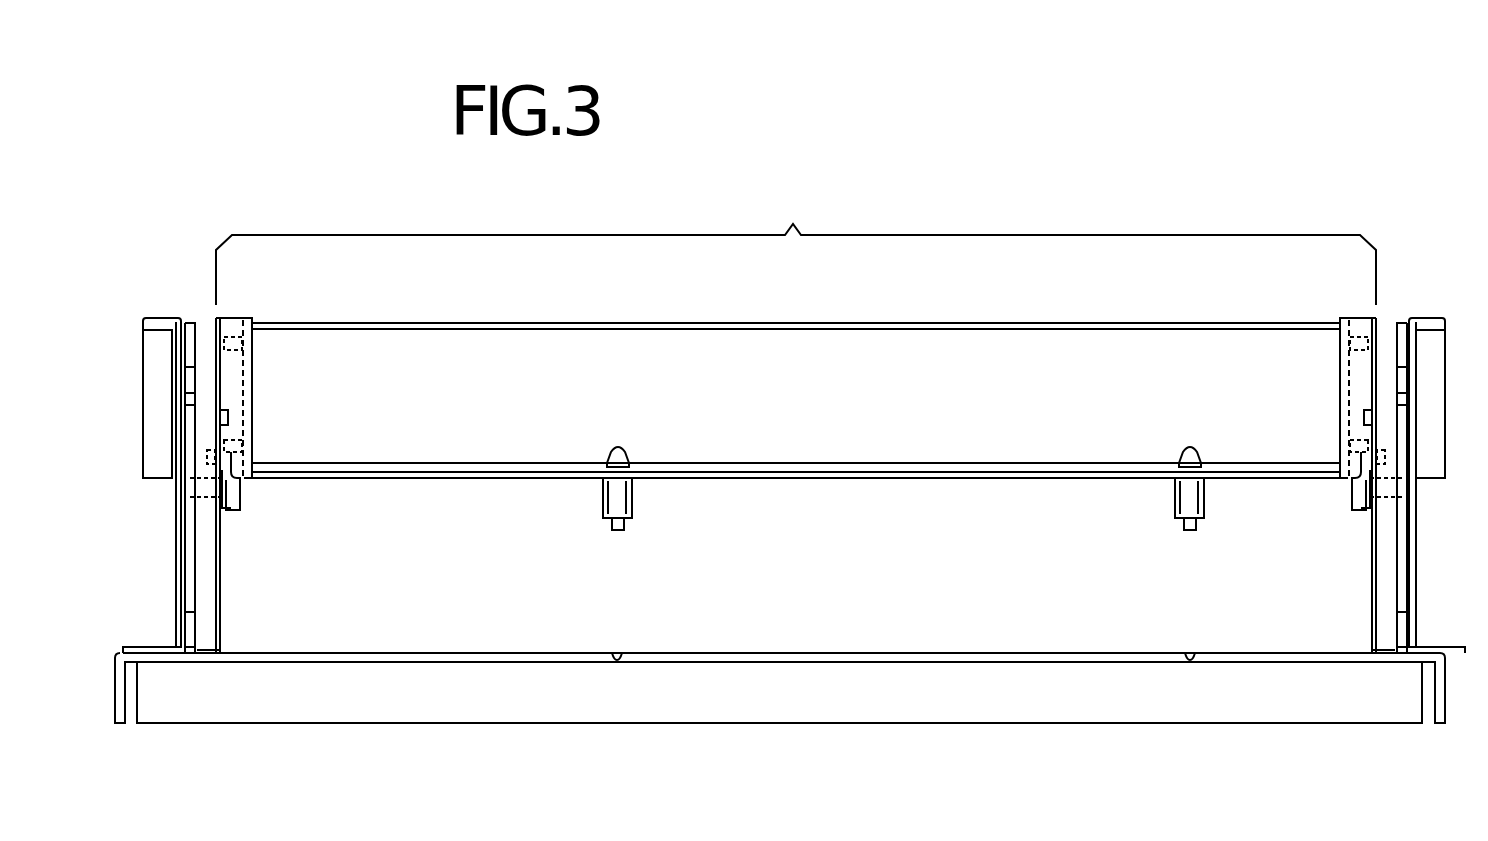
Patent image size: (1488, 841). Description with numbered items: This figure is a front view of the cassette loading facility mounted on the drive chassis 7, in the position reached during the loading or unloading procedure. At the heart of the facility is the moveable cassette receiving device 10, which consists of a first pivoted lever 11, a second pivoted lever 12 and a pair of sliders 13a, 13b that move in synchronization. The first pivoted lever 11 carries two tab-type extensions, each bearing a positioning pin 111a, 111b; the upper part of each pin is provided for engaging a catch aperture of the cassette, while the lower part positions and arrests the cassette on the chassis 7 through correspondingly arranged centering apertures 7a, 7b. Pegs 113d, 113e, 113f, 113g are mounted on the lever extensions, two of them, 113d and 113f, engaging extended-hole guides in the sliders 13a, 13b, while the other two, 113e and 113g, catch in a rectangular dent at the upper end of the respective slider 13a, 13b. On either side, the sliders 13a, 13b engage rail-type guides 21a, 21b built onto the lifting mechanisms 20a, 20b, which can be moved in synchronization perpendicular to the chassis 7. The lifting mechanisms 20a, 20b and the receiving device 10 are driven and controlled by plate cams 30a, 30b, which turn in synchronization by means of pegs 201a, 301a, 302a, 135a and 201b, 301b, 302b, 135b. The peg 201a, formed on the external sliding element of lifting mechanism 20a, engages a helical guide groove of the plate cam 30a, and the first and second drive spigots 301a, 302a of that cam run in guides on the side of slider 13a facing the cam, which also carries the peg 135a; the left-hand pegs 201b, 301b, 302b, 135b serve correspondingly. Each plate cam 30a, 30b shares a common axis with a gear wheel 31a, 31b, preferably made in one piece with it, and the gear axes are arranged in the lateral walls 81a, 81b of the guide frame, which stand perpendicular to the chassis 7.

The chassis 7 is at (1425, 738).
The centering aperture 7a is at (1190, 650).
The centering aperture 7b is at (618, 650).
The cassette receiving device 10 is at (796, 249).
The first pivoted lever 11 is at (818, 486).
The second pivoted lever 12 is at (648, 318).
The slider 13a is at (1352, 310).
The slider 13b is at (235, 310).
The lifting mechanism 20a is at (1462, 338).
The lifting mechanism 20b is at (126, 338).
The rail-type guide 21a is at (1350, 504).
The rail-type guide 21b is at (242, 500).
The plate cam 30a is at (1370, 598).
The plate cam 30b is at (222, 603).
The gear wheel 31a is at (1402, 598).
The gear wheel 31b is at (190, 598).
The lateral wall 81a is at (1414, 548).
The lateral wall 81b is at (178, 548).
The positioning pin 111a is at (1182, 496).
The positioning pin 111b is at (610, 496).
The peg 113d is at (1349, 446).
The peg 113e is at (1348, 344).
The peg 113f is at (243, 446).
The peg 113g is at (243, 344).
The peg 135a is at (1390, 455).
The peg 135b is at (207, 456).
The peg 201a is at (1397, 402).
The peg 201b is at (195, 400).
The first drive spigot 301a is at (1362, 420).
The first drive spigot 301b is at (230, 418).
The second drive spigot 302a is at (1364, 514).
The second drive spigot 302b is at (228, 512).